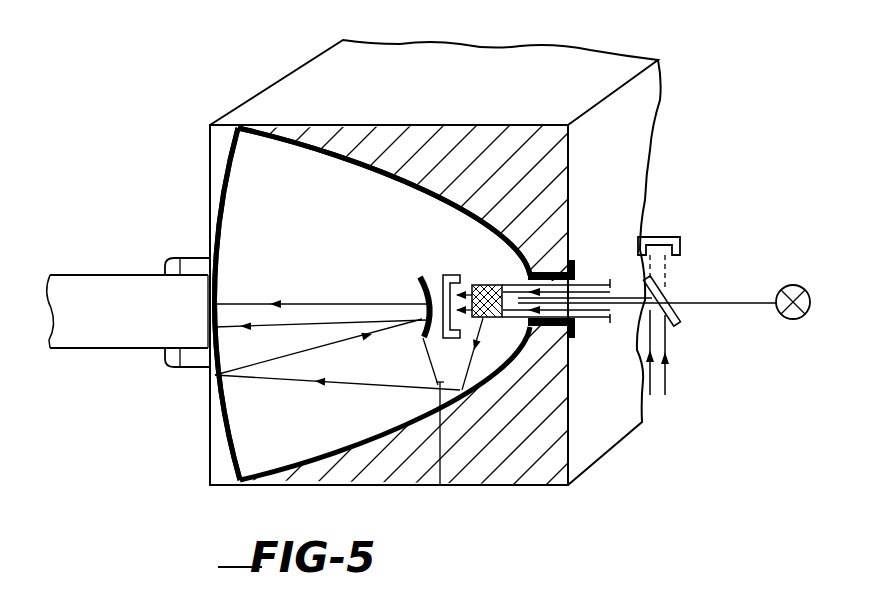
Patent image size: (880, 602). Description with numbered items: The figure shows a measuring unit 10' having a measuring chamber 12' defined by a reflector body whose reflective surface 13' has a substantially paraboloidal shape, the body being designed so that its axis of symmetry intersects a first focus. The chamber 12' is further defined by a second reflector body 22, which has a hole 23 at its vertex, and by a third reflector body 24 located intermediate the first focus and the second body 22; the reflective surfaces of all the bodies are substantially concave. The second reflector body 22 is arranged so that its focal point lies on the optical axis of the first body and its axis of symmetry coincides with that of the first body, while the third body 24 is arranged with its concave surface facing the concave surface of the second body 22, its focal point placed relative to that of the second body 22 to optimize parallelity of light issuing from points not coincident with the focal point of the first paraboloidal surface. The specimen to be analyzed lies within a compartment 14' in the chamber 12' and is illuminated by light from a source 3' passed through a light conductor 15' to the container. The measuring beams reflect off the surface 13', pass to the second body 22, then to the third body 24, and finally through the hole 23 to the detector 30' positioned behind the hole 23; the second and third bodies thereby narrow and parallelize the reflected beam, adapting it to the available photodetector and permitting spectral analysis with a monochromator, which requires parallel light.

The measuring unit 10' is at (440, 253).
The chamber 12' is at (338, 296).
The reflective surface 13' is at (384, 179).
The second reflector body 22 is at (225, 450).
The third reflector body 24 is at (422, 290).
The compartment 14' is at (480, 284).
The light conductor 15' is at (639, 277).
The source 3' is at (781, 282).
The detector 30' is at (123, 342).
The hole 23 is at (204, 329).